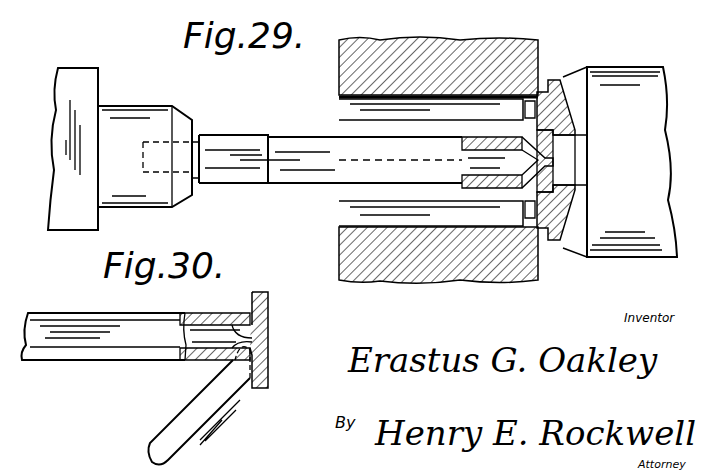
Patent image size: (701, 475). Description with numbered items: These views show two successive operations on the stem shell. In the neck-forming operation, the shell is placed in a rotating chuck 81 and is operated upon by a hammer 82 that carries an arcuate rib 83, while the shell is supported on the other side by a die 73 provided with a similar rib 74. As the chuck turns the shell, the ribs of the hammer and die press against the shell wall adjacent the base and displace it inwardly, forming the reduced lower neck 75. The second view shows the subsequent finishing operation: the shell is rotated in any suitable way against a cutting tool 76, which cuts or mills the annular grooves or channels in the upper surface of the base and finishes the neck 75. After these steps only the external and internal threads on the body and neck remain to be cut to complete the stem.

In FIG. 29, the die 73 is at (428, 283).
In FIG. 29, the rib 74 is at (543, 238).
In FIG. 29, the lower neck 75 is at (520, 140).
In FIG. 30, the cutting tool 76 is at (232, 398).
In FIG. 29, the rotating chuck 81 is at (638, 72).
In FIG. 29, the hammer 82 is at (490, 38).
In FIG. 29, the arcuate rib 83 is at (540, 92).